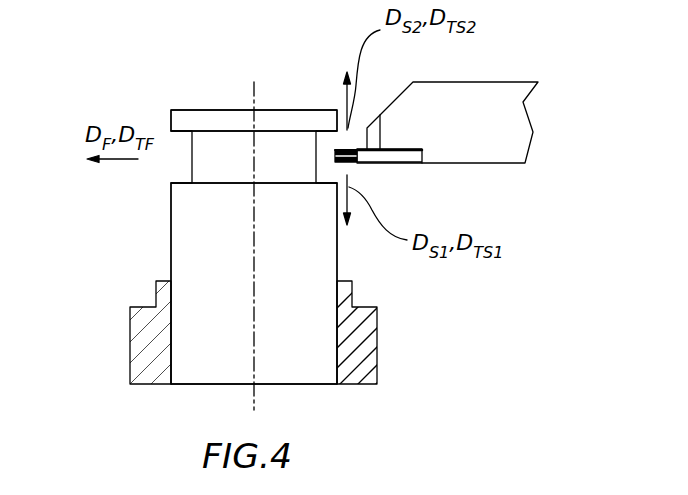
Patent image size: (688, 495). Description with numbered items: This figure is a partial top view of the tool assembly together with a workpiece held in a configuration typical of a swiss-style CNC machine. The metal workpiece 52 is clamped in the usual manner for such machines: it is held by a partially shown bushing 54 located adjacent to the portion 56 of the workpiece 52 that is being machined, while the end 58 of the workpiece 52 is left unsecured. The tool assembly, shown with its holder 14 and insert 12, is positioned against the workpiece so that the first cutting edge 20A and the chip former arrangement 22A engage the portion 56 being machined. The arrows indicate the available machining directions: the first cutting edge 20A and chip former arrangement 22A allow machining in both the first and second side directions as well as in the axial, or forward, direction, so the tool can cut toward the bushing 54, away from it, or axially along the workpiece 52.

The cutting insert 12 is at (407, 163).
The tool holder 14 is at (503, 87).
The first cutting edge 20A is at (350, 140).
The chip former arrangement 22A is at (362, 168).
The workpiece 52 is at (166, 91).
The bushing 54 is at (368, 280).
The portion of the workpiece being machined 56 is at (150, 179).
The end of the workpiece 58 is at (226, 92).